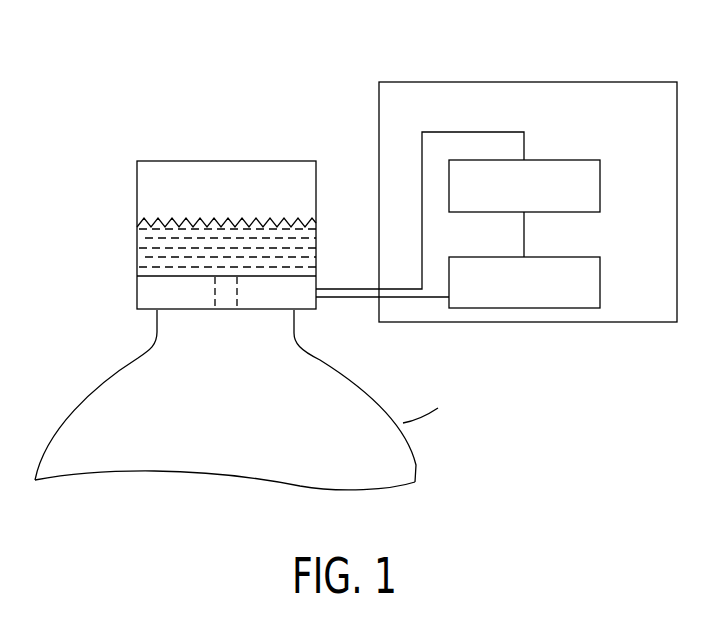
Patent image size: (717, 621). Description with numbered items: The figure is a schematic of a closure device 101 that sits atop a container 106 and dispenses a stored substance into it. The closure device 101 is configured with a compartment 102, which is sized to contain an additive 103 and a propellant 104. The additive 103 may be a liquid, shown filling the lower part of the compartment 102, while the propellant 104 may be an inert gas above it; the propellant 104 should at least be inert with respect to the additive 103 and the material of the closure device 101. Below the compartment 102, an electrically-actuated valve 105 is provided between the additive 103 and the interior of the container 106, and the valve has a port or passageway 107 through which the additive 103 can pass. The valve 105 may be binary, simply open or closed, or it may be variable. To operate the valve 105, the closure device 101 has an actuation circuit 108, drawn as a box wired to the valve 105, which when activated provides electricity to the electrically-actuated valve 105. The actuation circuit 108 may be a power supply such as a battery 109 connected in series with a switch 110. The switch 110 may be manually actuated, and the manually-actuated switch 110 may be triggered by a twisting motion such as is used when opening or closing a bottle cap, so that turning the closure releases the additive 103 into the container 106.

The closure device 101 is at (55, 134).
The compartment 102 is at (137, 173).
The additive 103 is at (126, 251).
The propellant 104 is at (147, 203).
The electrically-actuated valve 105 is at (148, 296).
The container 106 is at (211, 456).
The port or passageway 107 is at (229, 311).
The actuation circuit 108 is at (528, 81).
The battery 109 is at (600, 186).
The switch 110 is at (600, 284).